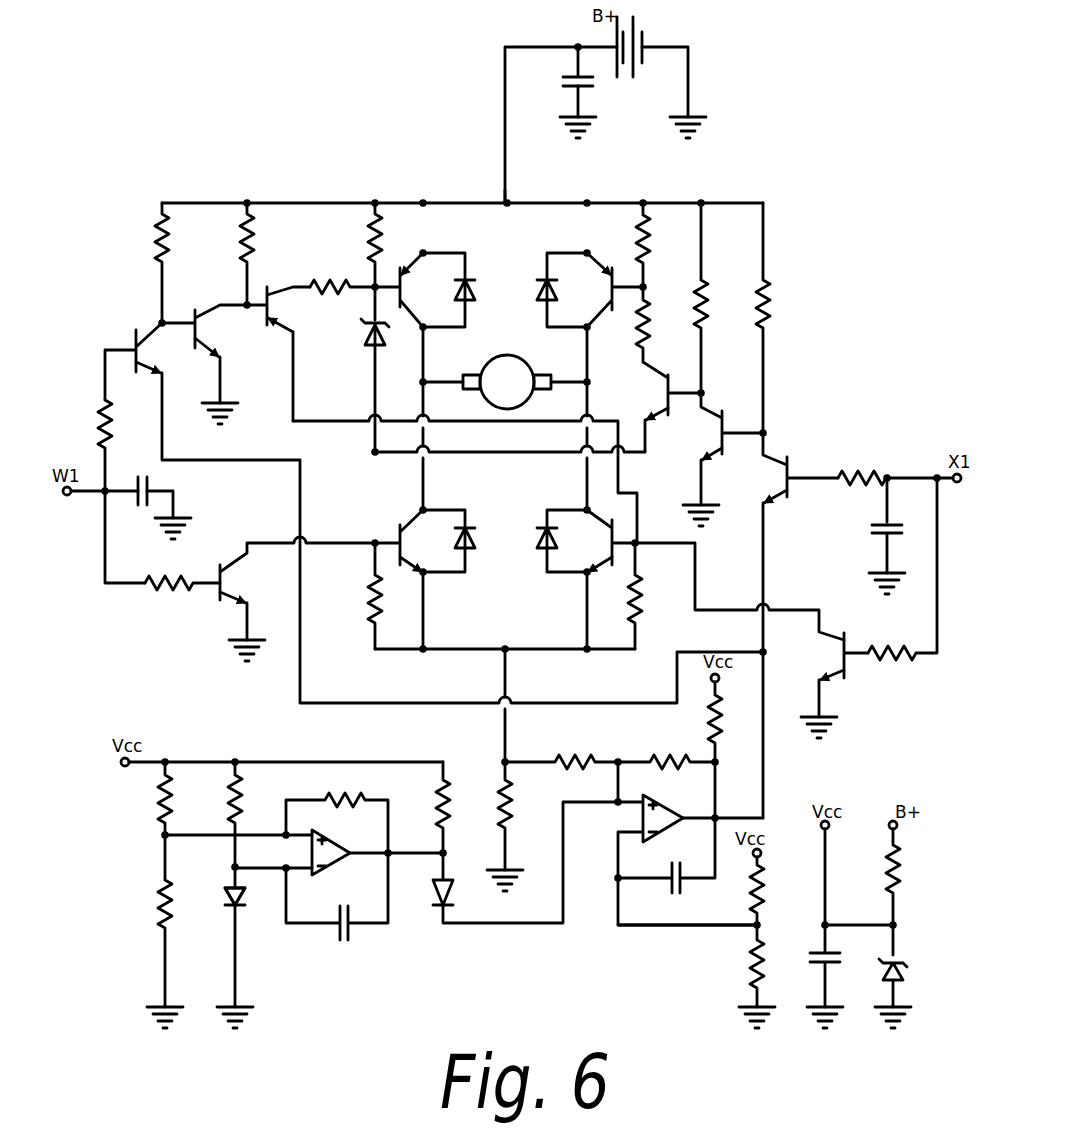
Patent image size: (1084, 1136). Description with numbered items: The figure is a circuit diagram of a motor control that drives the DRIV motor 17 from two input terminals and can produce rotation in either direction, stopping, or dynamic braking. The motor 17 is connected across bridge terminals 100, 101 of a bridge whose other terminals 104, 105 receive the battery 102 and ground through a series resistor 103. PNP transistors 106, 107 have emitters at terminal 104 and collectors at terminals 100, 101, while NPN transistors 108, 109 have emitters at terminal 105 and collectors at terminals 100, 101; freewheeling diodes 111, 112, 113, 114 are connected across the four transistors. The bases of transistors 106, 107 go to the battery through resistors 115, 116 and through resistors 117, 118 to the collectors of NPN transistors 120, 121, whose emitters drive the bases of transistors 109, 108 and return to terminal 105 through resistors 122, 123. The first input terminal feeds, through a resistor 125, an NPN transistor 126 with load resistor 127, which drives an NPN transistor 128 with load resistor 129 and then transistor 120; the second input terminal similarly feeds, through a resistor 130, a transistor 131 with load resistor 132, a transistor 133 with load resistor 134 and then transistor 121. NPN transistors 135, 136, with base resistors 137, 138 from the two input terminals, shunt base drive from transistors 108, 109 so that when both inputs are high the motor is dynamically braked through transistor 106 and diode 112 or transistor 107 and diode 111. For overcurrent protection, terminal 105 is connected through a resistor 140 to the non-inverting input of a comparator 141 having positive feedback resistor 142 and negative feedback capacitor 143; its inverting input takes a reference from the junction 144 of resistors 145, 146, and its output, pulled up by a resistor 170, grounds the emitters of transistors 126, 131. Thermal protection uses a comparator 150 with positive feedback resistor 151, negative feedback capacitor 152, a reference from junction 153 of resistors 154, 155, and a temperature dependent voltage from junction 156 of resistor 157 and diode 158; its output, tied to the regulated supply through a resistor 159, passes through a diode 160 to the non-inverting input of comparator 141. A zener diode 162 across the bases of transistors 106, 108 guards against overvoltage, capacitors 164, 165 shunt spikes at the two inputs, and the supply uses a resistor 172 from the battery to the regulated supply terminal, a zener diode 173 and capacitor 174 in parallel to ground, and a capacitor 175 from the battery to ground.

The DRIV motor 17 is at (507, 370).
The bridge terminal 100 is at (425, 380).
The bridge terminal 101 is at (585, 380).
The battery 102 is at (645, 44).
The series resistor 103 is at (508, 805).
The bridge terminal 104 is at (505, 198).
The bridge terminal 105 is at (507, 652).
The PNP transistor 106 is at (403, 265).
The PNP transistor 107 is at (605, 268).
The NPN transistor 108 is at (398, 538).
The NPN transistor 109 is at (612, 557).
The freewheeling diode 111 is at (470, 285).
The freewheeling diode 112 is at (545, 285).
The freewheeling diode 113 is at (470, 540).
The freewheeling diode 114 is at (545, 550).
The resistor 115 is at (373, 253).
The resistor 116 is at (645, 238).
The resistor 117 is at (330, 283).
The resistor 118 is at (646, 340).
The NPN transistor 120 is at (285, 322).
The NPN transistor 121 is at (666, 393).
The resistor 122 is at (640, 605).
The resistor 123 is at (373, 588).
The resistor 125 is at (107, 428).
The NPN transistor 126 is at (134, 345).
The resistor 127 is at (160, 245).
The NPN transistor 128 is at (193, 332).
The resistor 129 is at (245, 258).
The resistor 130 is at (862, 472).
The NPN transistor 131 is at (790, 460).
The resistor 132 is at (770, 300).
The NPN transistor 133 is at (720, 442).
The resistor 134 is at (704, 295).
The NPN transistor 135 is at (232, 580).
The NPN transistor 136 is at (847, 665).
The resistor 137 is at (170, 588).
The resistor 138 is at (900, 660).
The resistor 140 is at (590, 740).
The comparator 141 is at (641, 818).
The positive feedback resistor 142 is at (672, 765).
The negative feedback capacitor 143 is at (683, 882).
The junction 144 is at (755, 927).
The resistor 145 is at (762, 890).
The resistor 146 is at (752, 965).
The comparator 150 is at (330, 858).
The positive feedback resistor 151 is at (352, 797).
The negative feedback capacitor 152 is at (352, 928).
The junction 153 is at (162, 838).
The resistor 154 is at (160, 795).
The resistor 155 is at (160, 905).
The junction 156 is at (228, 888).
The resistor 157 is at (240, 800).
The diode 158 is at (242, 898).
The resistor 159 is at (450, 795).
The diode 160 is at (450, 895).
The zener diode 162 is at (372, 342).
The capacitor 164 is at (150, 485).
The capacitor 165 is at (884, 530).
The resistor 170 is at (712, 722).
The resistor 172 is at (900, 890).
The zener diode 173 is at (900, 975).
The capacitor 174 is at (832, 965).
The capacitor 175 is at (590, 88).